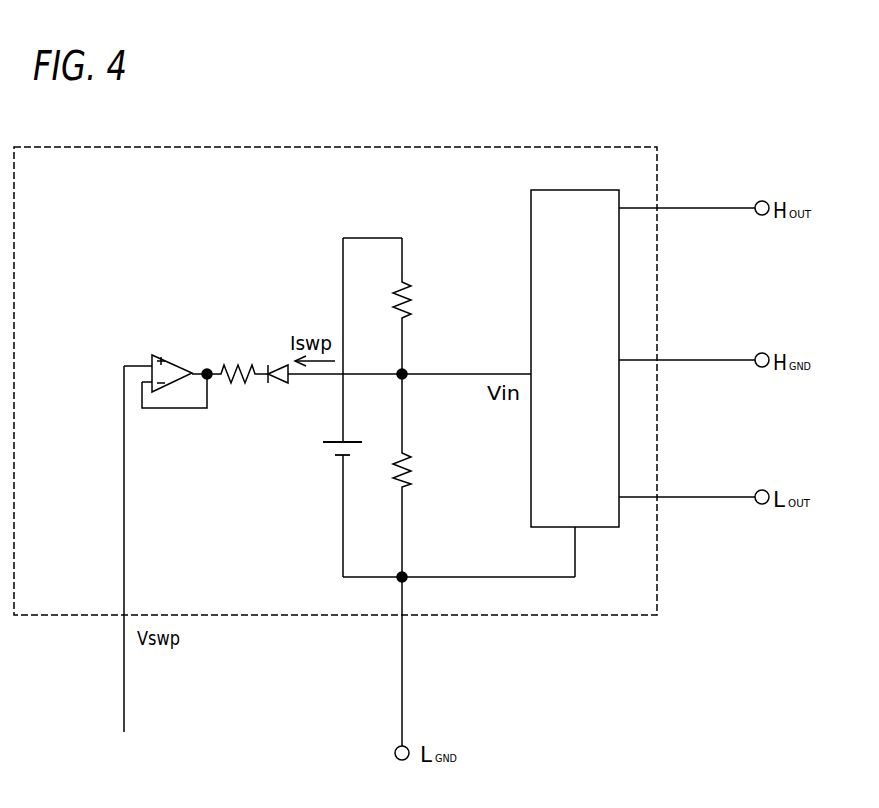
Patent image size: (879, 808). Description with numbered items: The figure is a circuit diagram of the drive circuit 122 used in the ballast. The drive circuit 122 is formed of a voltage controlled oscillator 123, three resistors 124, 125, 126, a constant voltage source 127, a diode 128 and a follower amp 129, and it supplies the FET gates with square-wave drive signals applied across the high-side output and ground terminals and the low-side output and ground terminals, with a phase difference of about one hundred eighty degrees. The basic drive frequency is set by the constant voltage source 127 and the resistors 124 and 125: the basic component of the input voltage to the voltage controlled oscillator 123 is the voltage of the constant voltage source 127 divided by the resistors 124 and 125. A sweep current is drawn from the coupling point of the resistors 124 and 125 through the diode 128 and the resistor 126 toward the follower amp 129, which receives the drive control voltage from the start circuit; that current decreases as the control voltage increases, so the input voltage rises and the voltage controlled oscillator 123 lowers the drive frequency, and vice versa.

The drive circuit 122 is at (381, 147).
The voltage controlled oscillator 123 is at (583, 190).
The resistor 124 is at (408, 295).
The resistor 125 is at (412, 463).
The resistor 126 is at (233, 364).
The constant voltage source 127 is at (338, 448).
The diode 128 is at (283, 384).
The follower amp 129 is at (152, 356).